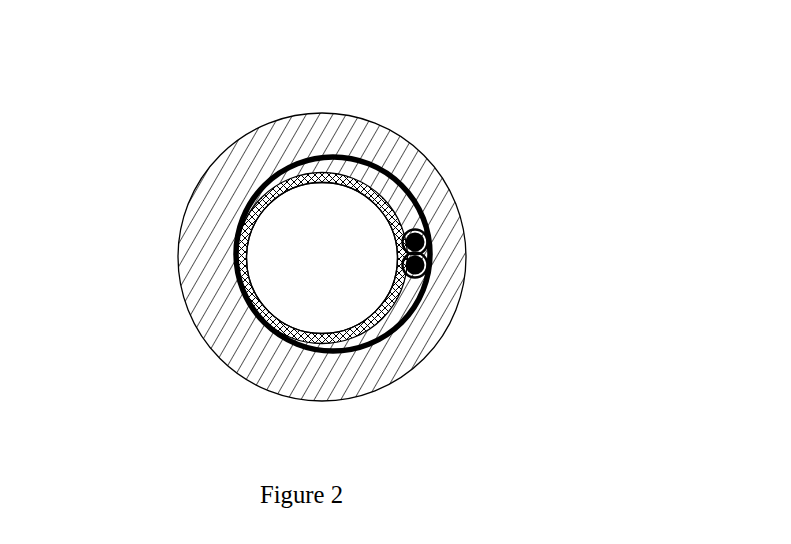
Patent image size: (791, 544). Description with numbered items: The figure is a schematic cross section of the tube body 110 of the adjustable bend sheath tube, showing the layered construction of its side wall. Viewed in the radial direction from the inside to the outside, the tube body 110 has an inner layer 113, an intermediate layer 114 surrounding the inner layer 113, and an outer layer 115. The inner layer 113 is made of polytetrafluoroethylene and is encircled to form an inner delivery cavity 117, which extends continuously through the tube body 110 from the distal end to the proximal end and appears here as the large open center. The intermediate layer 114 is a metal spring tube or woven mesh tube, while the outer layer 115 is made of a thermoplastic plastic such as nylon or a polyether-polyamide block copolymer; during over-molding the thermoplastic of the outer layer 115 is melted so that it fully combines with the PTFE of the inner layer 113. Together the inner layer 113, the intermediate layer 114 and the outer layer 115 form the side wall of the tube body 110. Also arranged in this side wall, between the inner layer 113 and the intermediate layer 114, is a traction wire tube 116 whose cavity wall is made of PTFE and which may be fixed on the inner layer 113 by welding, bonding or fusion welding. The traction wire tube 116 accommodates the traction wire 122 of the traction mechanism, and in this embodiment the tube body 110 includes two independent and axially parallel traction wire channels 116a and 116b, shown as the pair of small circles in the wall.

The tube body 110 is at (157, 117).
The inner layer 113 is at (390, 337).
The intermediate layer 114 is at (420, 180).
The outer layer 115 is at (210, 213).
The traction wire tube 116 is at (516, 277).
The traction wire channel 116a is at (428, 248).
The traction wire channel 116b is at (428, 264).
The inner delivery cavity 117 is at (290, 272).
The traction wire 122 is at (428, 244).